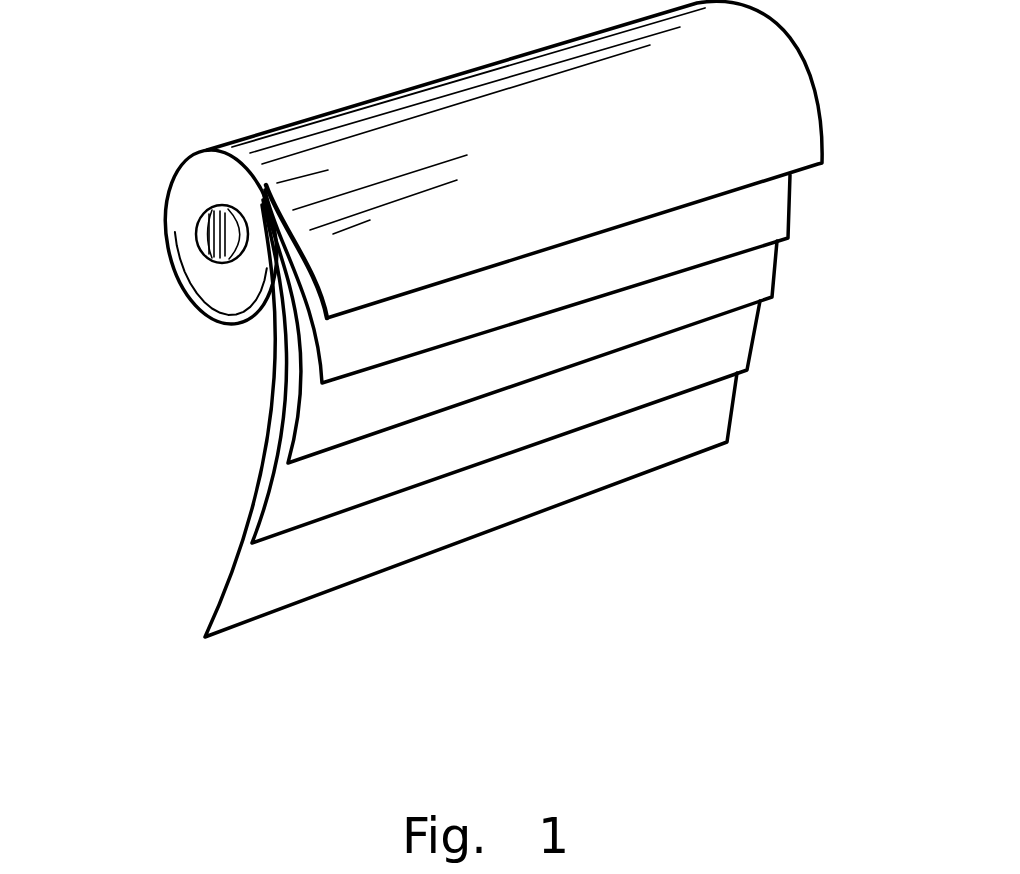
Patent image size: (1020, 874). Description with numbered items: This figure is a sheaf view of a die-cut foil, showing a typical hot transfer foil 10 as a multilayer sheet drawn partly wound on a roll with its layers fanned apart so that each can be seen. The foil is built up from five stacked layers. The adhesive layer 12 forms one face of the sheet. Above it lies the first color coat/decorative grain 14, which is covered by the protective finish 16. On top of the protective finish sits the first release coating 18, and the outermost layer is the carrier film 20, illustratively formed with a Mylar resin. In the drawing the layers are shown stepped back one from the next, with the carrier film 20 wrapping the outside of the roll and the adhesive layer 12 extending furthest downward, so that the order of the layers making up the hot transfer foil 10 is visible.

The hot transfer foil 10 is at (162, 445).
The adhesive layer 12 is at (708, 428).
The first color coat/decorative grain 14 is at (737, 357).
The protective finish 16 is at (758, 275).
The first release coating 18 is at (763, 215).
The carrier film 20 is at (793, 107).